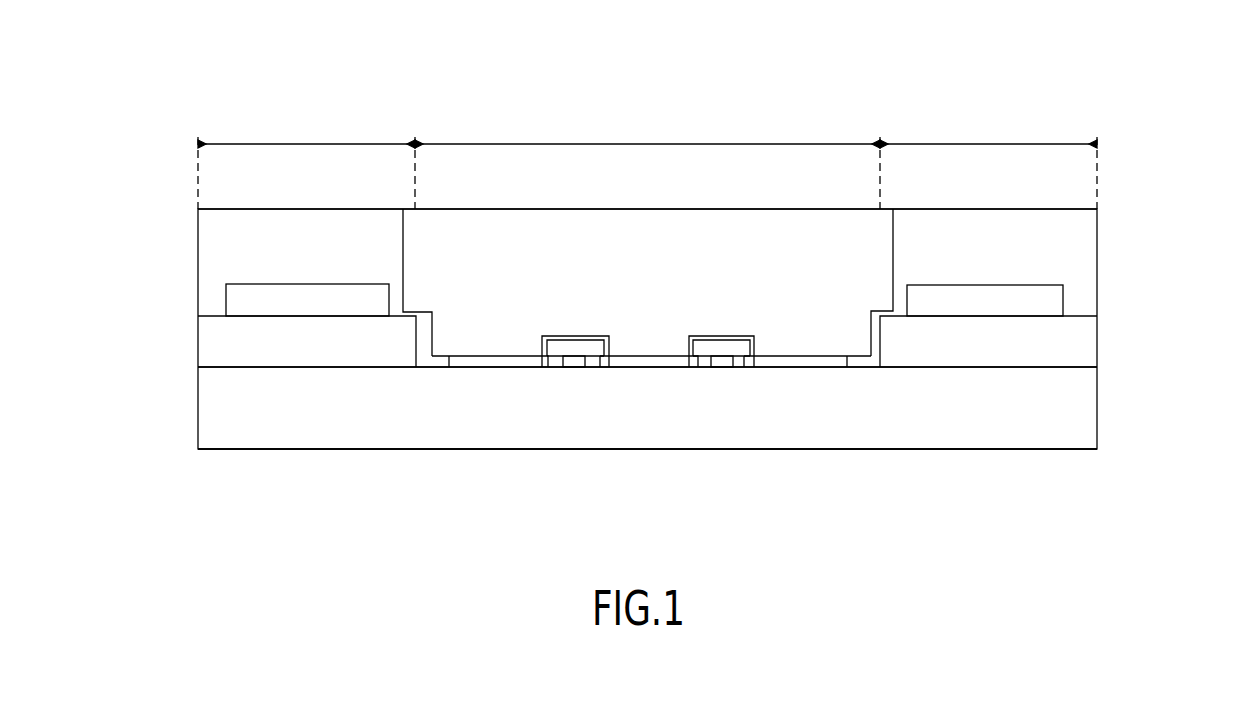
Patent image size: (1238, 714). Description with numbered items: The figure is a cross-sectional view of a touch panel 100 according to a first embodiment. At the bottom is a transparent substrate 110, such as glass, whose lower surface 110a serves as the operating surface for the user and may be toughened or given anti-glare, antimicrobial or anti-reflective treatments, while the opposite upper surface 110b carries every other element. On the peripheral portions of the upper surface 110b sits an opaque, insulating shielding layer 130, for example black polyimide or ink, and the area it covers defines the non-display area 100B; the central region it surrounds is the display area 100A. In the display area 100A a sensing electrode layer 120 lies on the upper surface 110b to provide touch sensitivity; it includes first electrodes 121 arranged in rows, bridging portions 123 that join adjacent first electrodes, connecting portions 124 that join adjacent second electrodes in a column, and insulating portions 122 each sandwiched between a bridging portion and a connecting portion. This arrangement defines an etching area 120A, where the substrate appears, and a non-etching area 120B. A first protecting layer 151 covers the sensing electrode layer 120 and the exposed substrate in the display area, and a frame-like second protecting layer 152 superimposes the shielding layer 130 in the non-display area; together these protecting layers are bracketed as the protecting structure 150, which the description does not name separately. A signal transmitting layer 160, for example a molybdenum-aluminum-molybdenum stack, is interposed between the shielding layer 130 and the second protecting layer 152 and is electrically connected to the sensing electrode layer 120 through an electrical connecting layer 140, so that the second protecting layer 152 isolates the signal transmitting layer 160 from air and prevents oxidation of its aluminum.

The touch panel 100 is at (165, 148).
The display area 100A is at (647, 142).
The non-display area 100B is at (308, 142).
The substrate 110 is at (1082, 402).
The lower surface 110a is at (218, 452).
The upper surface 110b is at (211, 361).
The sensing electrode layer 120 is at (651, 442).
The etching area 120A is at (555, 366).
The non-etching area 120B is at (662, 360).
The first electrodes 121 is at (449, 357).
The insulating portions 122 is at (592, 350).
The bridging portions 123 is at (693, 338).
The connecting portions 124 is at (744, 429).
The shielding layer 130 is at (1087, 343).
The electrical connecting layer 140 is at (863, 350).
The encapsulation cover 150 is at (703, 186).
The first protecting layer 151 is at (833, 228).
The second protecting layer 152 is at (1043, 222).
The signal transmitting layer 160 is at (370, 297).